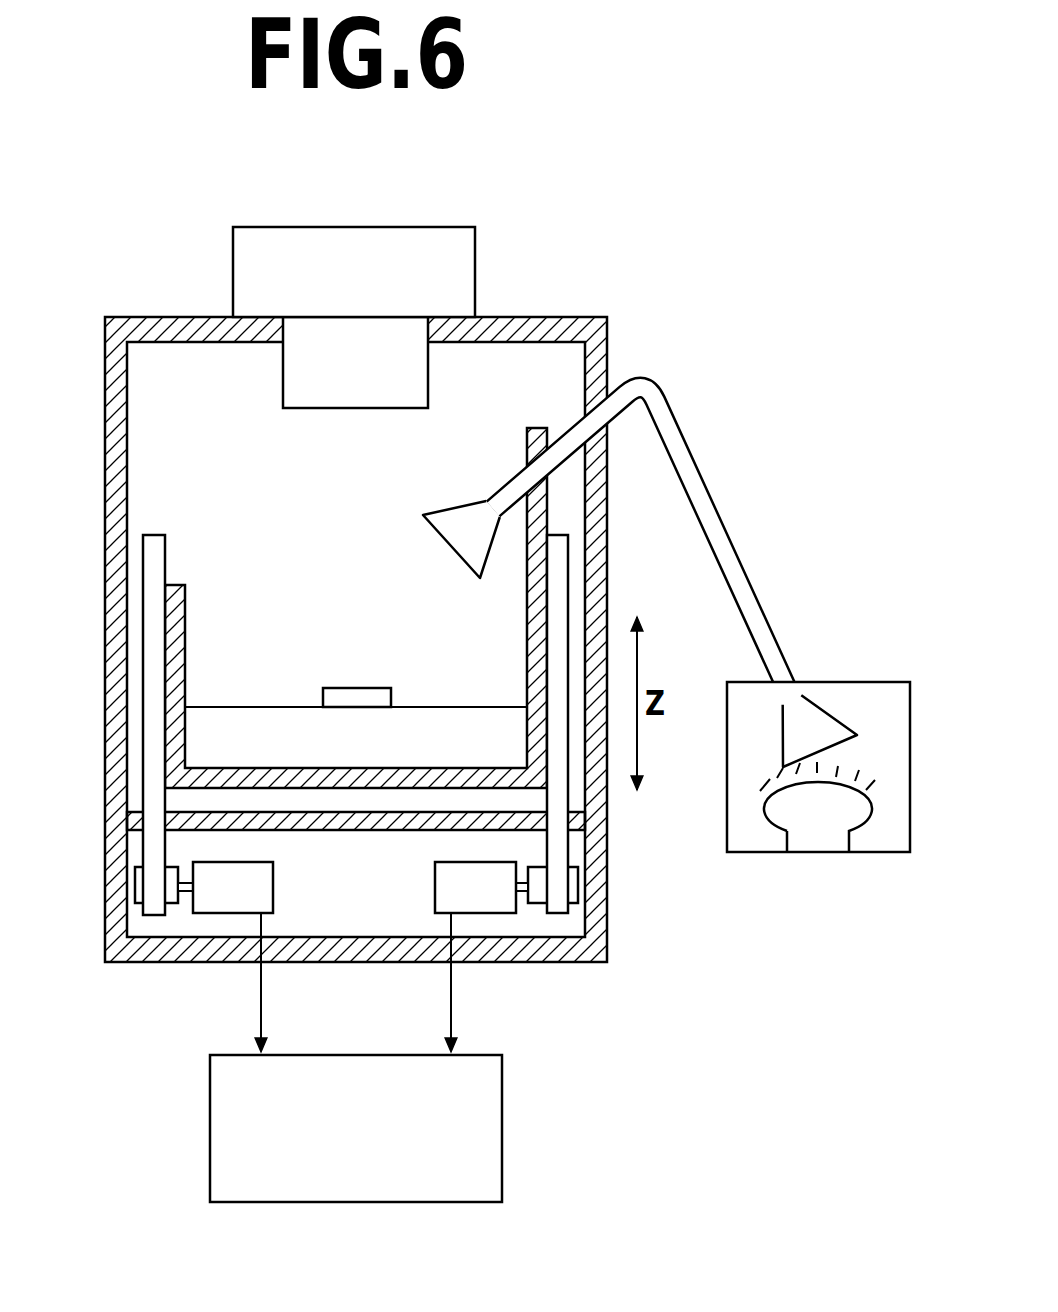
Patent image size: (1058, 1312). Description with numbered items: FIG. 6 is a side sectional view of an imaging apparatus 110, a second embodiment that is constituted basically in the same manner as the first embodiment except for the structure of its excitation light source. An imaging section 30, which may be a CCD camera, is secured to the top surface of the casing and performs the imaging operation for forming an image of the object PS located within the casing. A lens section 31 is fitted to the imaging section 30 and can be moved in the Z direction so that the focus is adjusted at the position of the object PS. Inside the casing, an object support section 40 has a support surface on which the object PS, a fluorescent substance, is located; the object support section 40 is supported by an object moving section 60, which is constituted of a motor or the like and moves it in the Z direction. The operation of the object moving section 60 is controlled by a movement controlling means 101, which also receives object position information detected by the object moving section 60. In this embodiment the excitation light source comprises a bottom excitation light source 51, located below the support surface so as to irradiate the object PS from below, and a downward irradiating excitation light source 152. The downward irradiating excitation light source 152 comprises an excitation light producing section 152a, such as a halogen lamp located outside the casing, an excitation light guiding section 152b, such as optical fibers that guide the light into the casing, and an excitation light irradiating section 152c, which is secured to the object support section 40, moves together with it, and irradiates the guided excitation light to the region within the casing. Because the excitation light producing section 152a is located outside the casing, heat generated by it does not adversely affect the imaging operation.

The imaging apparatus 110 is at (638, 168).
The imaging section 30 is at (447, 242).
The lens section 31 is at (297, 375).
The object support section 40 is at (177, 613).
The bottom excitation light source 51 is at (202, 735).
The object moving section 60 is at (493, 893).
The movement controlling means 101 is at (502, 1130).
The downward irradiating excitation light source 152 is at (718, 487).
The excitation light producing section 152a is at (818, 840).
The excitation light guiding section 152b is at (757, 617).
The excitation light irradiating section 152c is at (467, 542).
The object PS is at (376, 688).